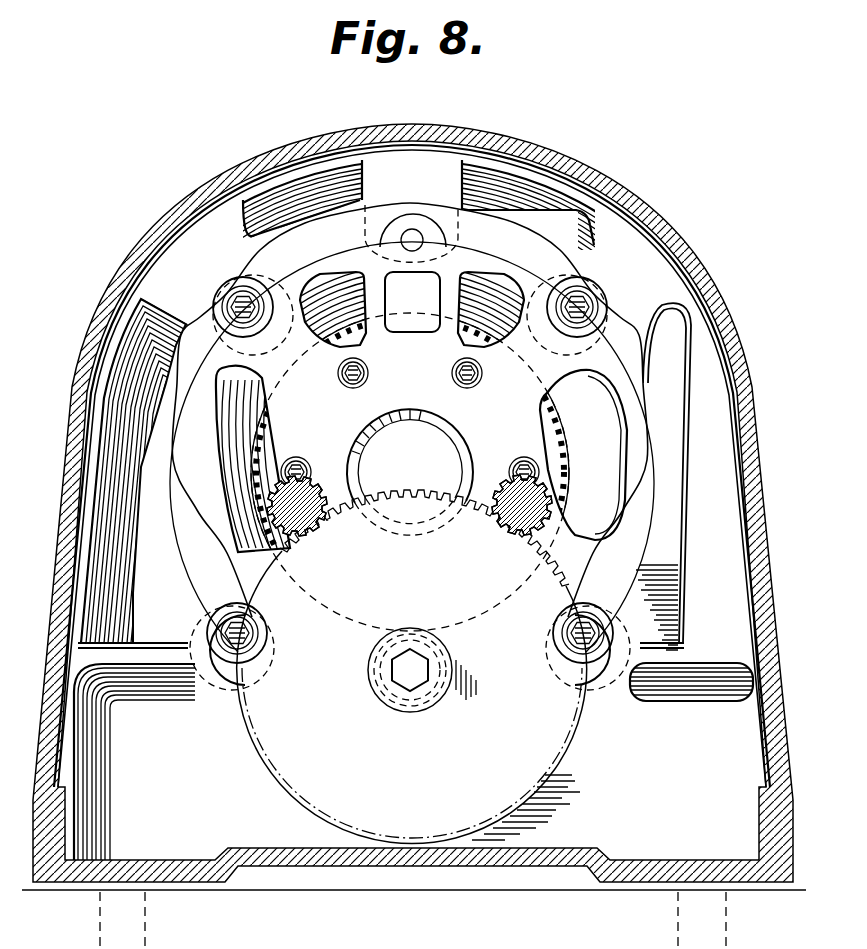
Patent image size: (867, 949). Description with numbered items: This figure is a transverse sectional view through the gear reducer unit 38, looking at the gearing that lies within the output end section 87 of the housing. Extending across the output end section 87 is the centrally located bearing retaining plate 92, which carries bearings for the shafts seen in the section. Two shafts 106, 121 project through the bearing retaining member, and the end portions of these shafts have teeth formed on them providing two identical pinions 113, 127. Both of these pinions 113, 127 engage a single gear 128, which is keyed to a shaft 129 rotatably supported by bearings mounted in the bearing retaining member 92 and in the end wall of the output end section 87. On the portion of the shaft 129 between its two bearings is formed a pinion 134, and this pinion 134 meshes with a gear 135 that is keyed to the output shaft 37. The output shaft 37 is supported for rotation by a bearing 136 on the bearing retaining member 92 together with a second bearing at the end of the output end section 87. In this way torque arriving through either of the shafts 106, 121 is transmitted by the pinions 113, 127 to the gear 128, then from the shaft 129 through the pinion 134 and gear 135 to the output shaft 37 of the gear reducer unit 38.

The gear reducer unit 38 is at (676, 243).
The output end section 87 is at (758, 441).
The bearing 136 is at (401, 413).
The output shaft 37 is at (440, 446).
The pinion 113 is at (308, 480).
The pinion 127 is at (503, 480).
The gear 135 is at (568, 451).
The shaft 106 is at (308, 538).
The shaft 121 is at (504, 530).
The bearing retaining plate 92 is at (622, 568).
The shaft 129 is at (458, 664).
The pinion 134 is at (408, 705).
The gear 128 is at (540, 745).